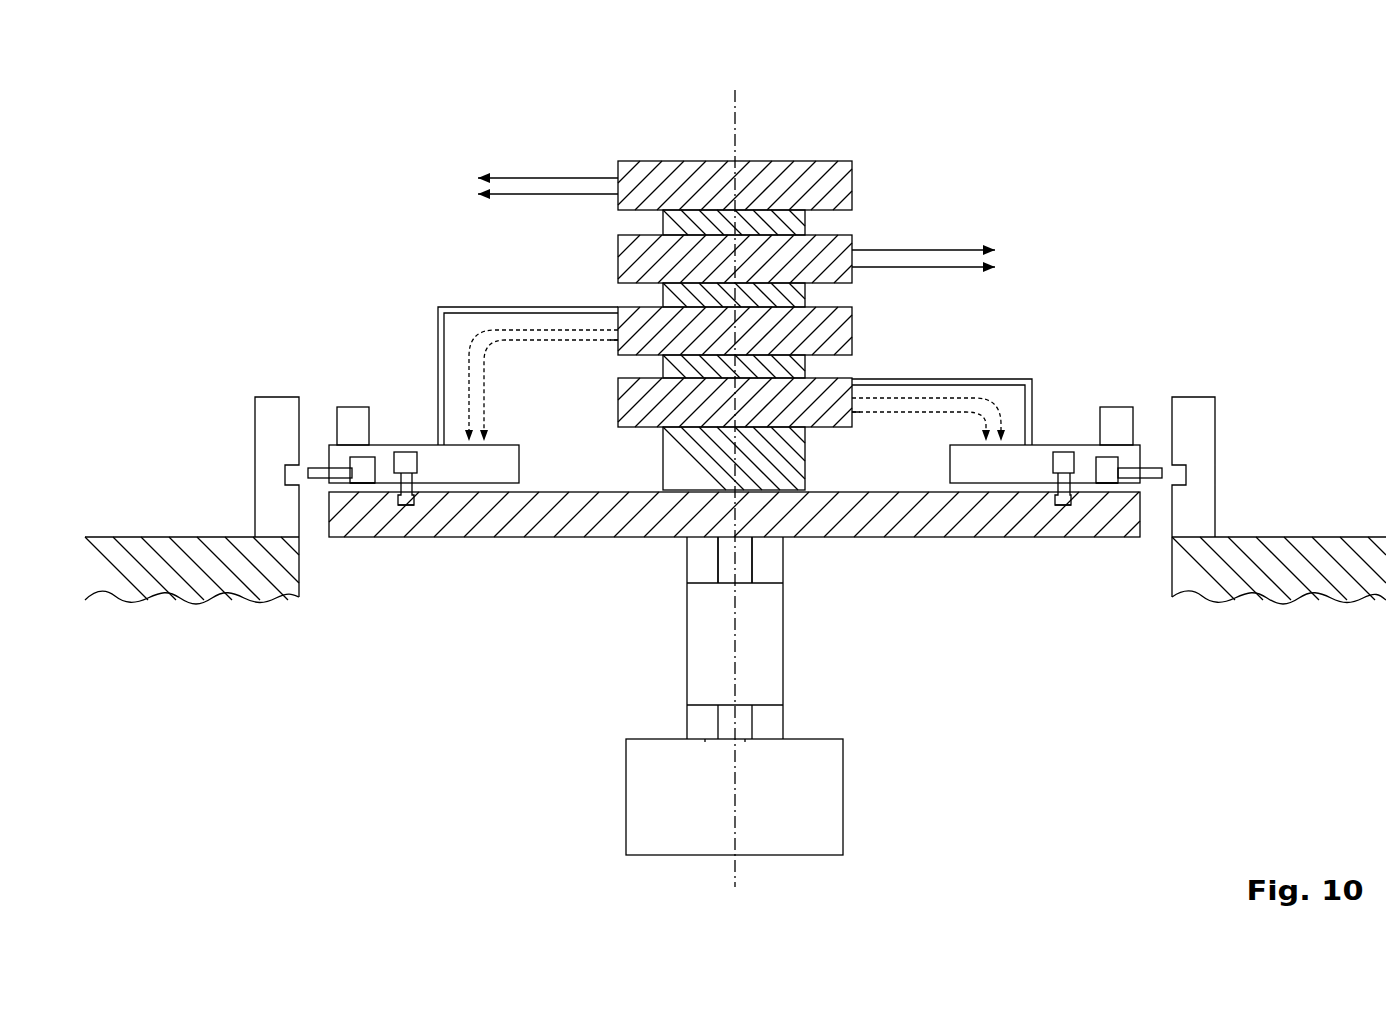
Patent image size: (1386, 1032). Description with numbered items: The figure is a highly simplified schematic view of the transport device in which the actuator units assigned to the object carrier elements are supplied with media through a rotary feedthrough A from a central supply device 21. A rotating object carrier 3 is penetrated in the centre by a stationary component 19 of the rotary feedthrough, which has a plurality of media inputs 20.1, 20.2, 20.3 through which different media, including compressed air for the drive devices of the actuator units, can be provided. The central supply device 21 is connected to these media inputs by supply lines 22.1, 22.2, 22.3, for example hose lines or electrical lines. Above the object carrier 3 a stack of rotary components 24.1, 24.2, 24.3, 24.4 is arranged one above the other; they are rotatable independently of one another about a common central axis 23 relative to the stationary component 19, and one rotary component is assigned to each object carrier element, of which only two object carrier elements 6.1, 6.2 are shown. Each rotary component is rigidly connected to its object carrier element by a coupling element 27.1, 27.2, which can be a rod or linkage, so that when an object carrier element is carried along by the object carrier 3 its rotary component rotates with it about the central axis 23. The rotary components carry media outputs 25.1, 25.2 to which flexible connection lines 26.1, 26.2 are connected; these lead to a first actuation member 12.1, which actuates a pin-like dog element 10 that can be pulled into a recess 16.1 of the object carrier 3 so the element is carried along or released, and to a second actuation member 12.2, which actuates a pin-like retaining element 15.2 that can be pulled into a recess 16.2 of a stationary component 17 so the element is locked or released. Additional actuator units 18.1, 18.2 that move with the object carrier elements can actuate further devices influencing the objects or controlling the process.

The object carrier 3 is at (627, 510).
The object carrier element 6.1 is at (488, 462).
The object carrier element 6.2 is at (982, 462).
The dog element 10 is at (404, 478).
The first actuation member 12.1 is at (407, 462).
The second actuation member 12.2 is at (362, 468).
The retaining element 15.2 is at (353, 483).
The recess 16.1 is at (406, 502).
The recess 16.2 is at (303, 482).
The stationary component 17 is at (276, 428).
The additional actuator unit 18.1 is at (352, 422).
The additional actuator unit 18.2 is at (1118, 422).
The stationary component 19 is at (663, 456).
The media input 20.1 is at (767, 560).
The media input 20.2 is at (743, 567).
The media input 20.3 is at (700, 567).
The central supply device 21 is at (805, 794).
The supply line 22.1 is at (770, 722).
The supply line 22.2 is at (743, 722).
The supply line 22.3 is at (702, 722).
The central axis 23 is at (735, 108).
The rotary component 24.1 is at (757, 416).
The rotary component 24.2 is at (757, 344).
The rotary component 24.3 is at (757, 272).
The rotary component 24.4 is at (757, 199).
The media output 25.1 is at (582, 340).
The media output 25.2 is at (620, 350).
The connection line 26.1 is at (510, 330).
The connection line 26.2 is at (458, 313).
The coupling element 27.1 is at (438, 340).
The coupling element 27.2 is at (1032, 340).
The rotary feedthrough A is at (872, 117).